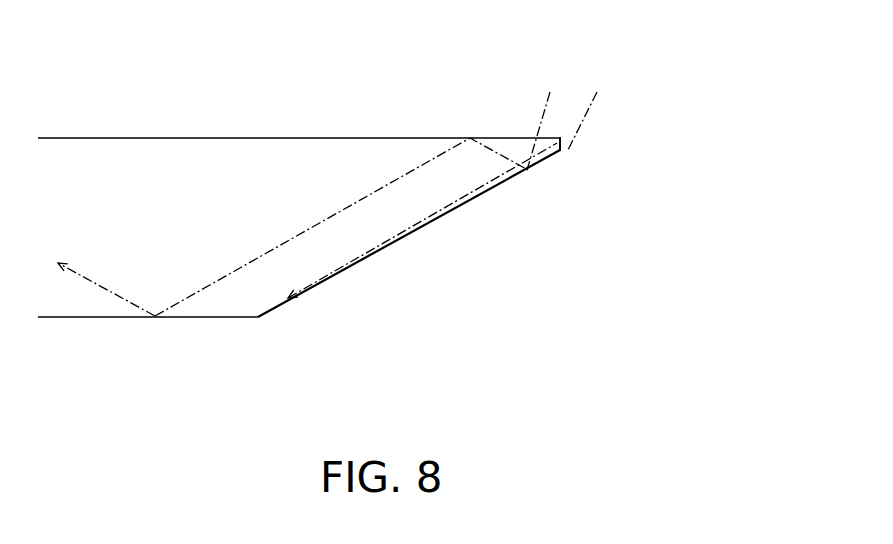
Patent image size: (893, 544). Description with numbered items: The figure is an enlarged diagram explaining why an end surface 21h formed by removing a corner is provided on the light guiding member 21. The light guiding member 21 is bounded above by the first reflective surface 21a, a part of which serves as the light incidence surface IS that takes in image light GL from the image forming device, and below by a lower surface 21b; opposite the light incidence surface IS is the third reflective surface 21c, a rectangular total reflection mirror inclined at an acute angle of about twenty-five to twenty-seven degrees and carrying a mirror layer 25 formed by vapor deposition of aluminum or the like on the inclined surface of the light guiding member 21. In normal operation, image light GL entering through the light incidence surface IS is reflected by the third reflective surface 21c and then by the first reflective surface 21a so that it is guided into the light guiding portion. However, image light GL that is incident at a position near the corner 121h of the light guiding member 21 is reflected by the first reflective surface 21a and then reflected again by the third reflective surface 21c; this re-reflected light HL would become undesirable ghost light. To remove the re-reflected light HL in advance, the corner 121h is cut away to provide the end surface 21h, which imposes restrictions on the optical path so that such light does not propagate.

The light guiding member 21 is at (86, 138).
The first reflective surface 21a is at (160, 138).
The bottom surface 21b is at (140, 318).
The third reflective surface 21c is at (323, 283).
The end surface 21h is at (565, 148).
The mirror layer 25 is at (433, 222).
The light incidence surface IS is at (410, 138).
The image light GL is at (598, 89).
The re-reflected light HL is at (594, 108).
The corner 121h is at (562, 142).